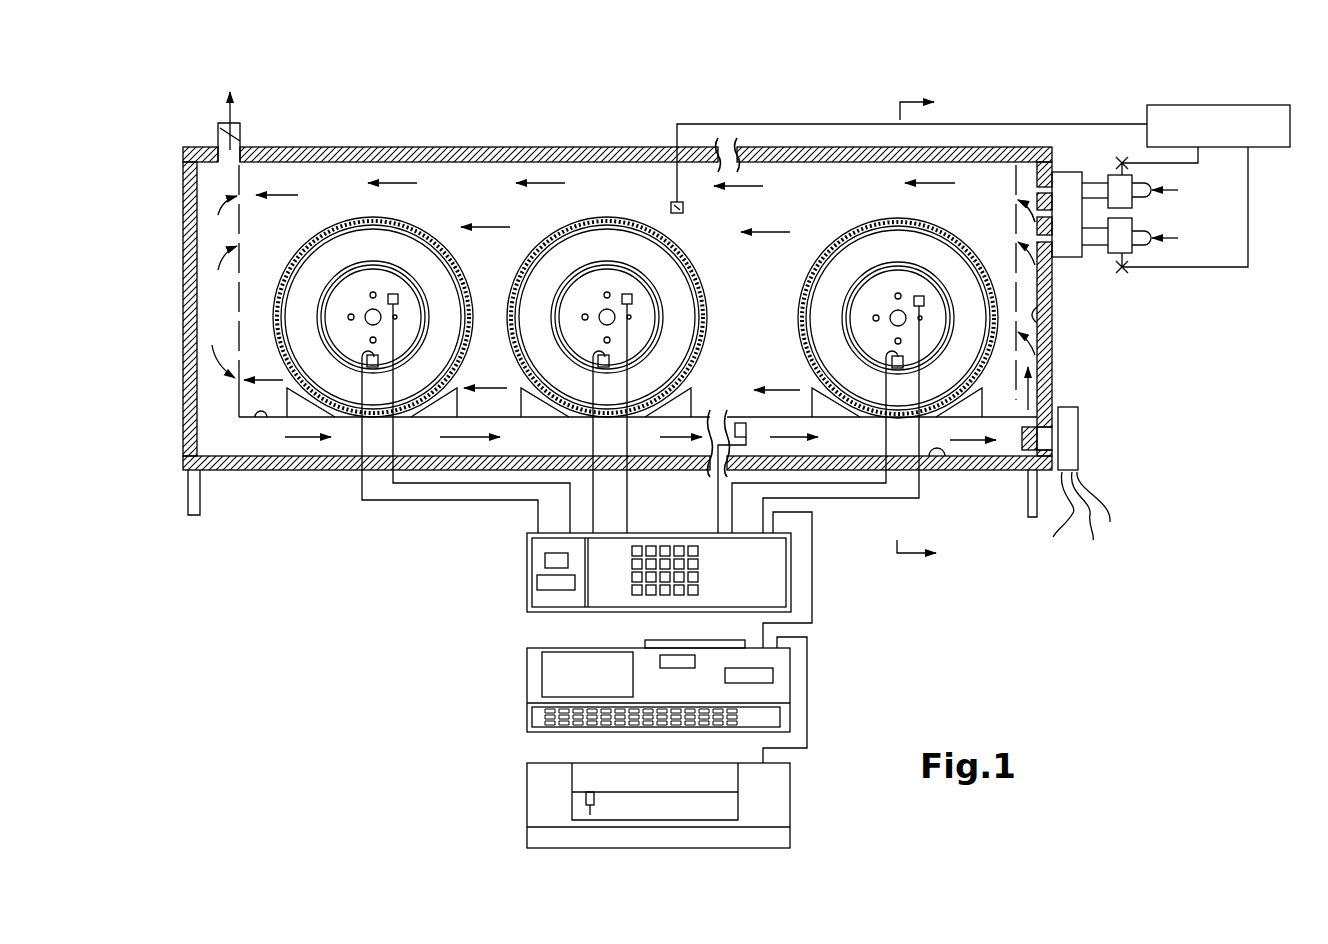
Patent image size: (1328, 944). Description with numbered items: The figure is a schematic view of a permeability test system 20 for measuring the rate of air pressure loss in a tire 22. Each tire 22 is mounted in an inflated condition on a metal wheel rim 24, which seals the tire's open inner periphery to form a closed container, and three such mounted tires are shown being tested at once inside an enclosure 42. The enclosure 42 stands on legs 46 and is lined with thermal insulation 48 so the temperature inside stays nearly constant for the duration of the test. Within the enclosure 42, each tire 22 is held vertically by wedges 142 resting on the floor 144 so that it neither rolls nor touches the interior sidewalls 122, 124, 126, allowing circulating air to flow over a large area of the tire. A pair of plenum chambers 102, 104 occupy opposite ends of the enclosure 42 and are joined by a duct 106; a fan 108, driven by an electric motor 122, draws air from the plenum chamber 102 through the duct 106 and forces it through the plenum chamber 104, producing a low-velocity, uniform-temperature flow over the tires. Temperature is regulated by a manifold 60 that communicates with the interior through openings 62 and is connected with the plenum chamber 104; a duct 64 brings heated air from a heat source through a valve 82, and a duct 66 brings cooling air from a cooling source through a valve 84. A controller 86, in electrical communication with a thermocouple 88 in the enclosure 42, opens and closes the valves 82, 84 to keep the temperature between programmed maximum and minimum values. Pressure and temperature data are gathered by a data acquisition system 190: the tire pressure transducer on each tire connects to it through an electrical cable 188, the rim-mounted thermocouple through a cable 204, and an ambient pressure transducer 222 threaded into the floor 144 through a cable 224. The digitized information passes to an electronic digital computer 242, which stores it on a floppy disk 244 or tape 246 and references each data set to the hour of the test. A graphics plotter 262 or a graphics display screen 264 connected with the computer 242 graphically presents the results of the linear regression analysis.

The permeability test system 20 is at (950, 599).
The tire 22 is at (410, 258).
The wheel rim 24 is at (575, 315).
The enclosure 42 is at (799, 145).
The legs 46 is at (200, 490).
The thermal insulation 48 is at (505, 148).
The manifold 60 is at (1062, 243).
The openings 62 is at (1044, 205).
The duct 64 is at (1095, 194).
The duct 66 is at (1095, 238).
The valve 82 is at (1114, 185).
The valve 84 is at (1124, 246).
The controller 86 is at (1273, 144).
The thermocouple 88 is at (683, 208).
The plenum chamber 102 is at (206, 212).
The plenum chamber 104 is at (1053, 326).
The duct 106 is at (948, 457).
The fan 108 is at (1060, 436).
The electric motor 122 is at (240, 216).
The sidewall 124 is at (1020, 222).
The sidewall 126 is at (562, 219).
The wedges 142 is at (461, 394).
The floor 144 is at (261, 413).
The electrical cable 188 is at (826, 485).
The data acquisition system 190 is at (524, 587).
The cable 204 is at (890, 500).
The ambient pressure transducer 222 is at (747, 430).
The cable 224 is at (717, 505).
The electronic digital computer 242 is at (525, 690).
The floppy disk 244 is at (773, 677).
The tape 246 is at (675, 660).
The graphics plotter 262 is at (527, 803).
The graphics display screen 264 is at (565, 664).